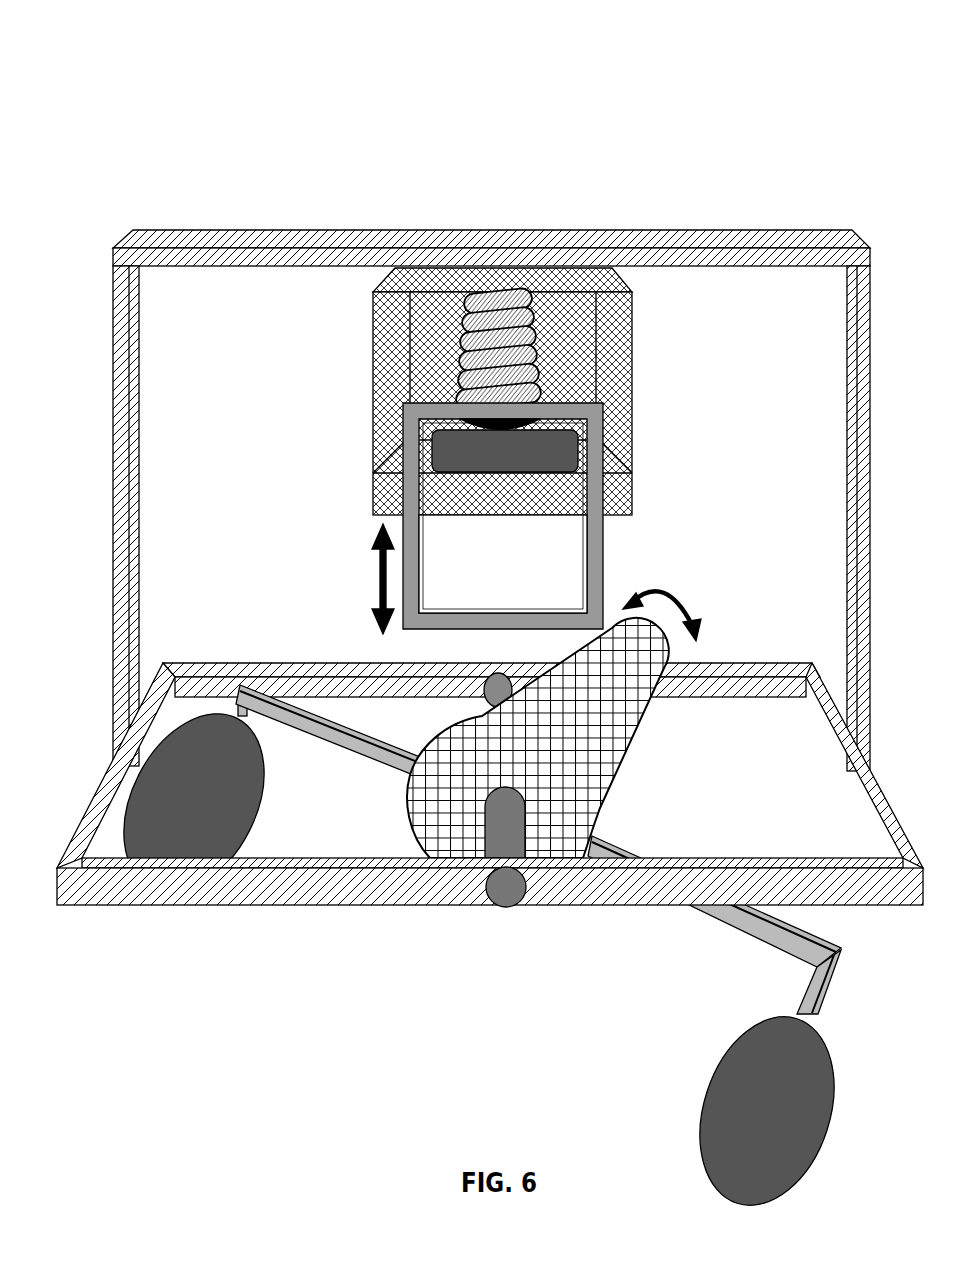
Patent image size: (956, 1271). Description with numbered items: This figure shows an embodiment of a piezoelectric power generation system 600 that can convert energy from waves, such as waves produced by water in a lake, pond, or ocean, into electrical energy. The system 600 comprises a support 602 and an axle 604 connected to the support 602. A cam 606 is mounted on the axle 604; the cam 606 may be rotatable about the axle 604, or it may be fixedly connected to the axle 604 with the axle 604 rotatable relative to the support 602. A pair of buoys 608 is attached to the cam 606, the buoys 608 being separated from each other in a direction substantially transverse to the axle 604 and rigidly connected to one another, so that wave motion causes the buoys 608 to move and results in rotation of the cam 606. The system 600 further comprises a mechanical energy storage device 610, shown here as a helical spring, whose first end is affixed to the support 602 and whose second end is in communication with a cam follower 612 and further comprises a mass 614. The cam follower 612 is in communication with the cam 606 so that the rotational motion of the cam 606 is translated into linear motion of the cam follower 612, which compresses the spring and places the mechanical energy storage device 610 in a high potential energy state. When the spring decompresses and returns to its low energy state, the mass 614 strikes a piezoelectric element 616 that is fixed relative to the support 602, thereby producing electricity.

The piezoelectric power generation system 600 is at (258, 44).
The support 602 is at (104, 796).
The axle 604 is at (505, 902).
The cam 606 is at (625, 760).
The buoys 608 is at (256, 790).
The mechanical energy storage device 610 is at (537, 350).
The cam follower 612 is at (596, 533).
The mass 614 is at (447, 396).
The piezoelectric element 616 is at (462, 473).